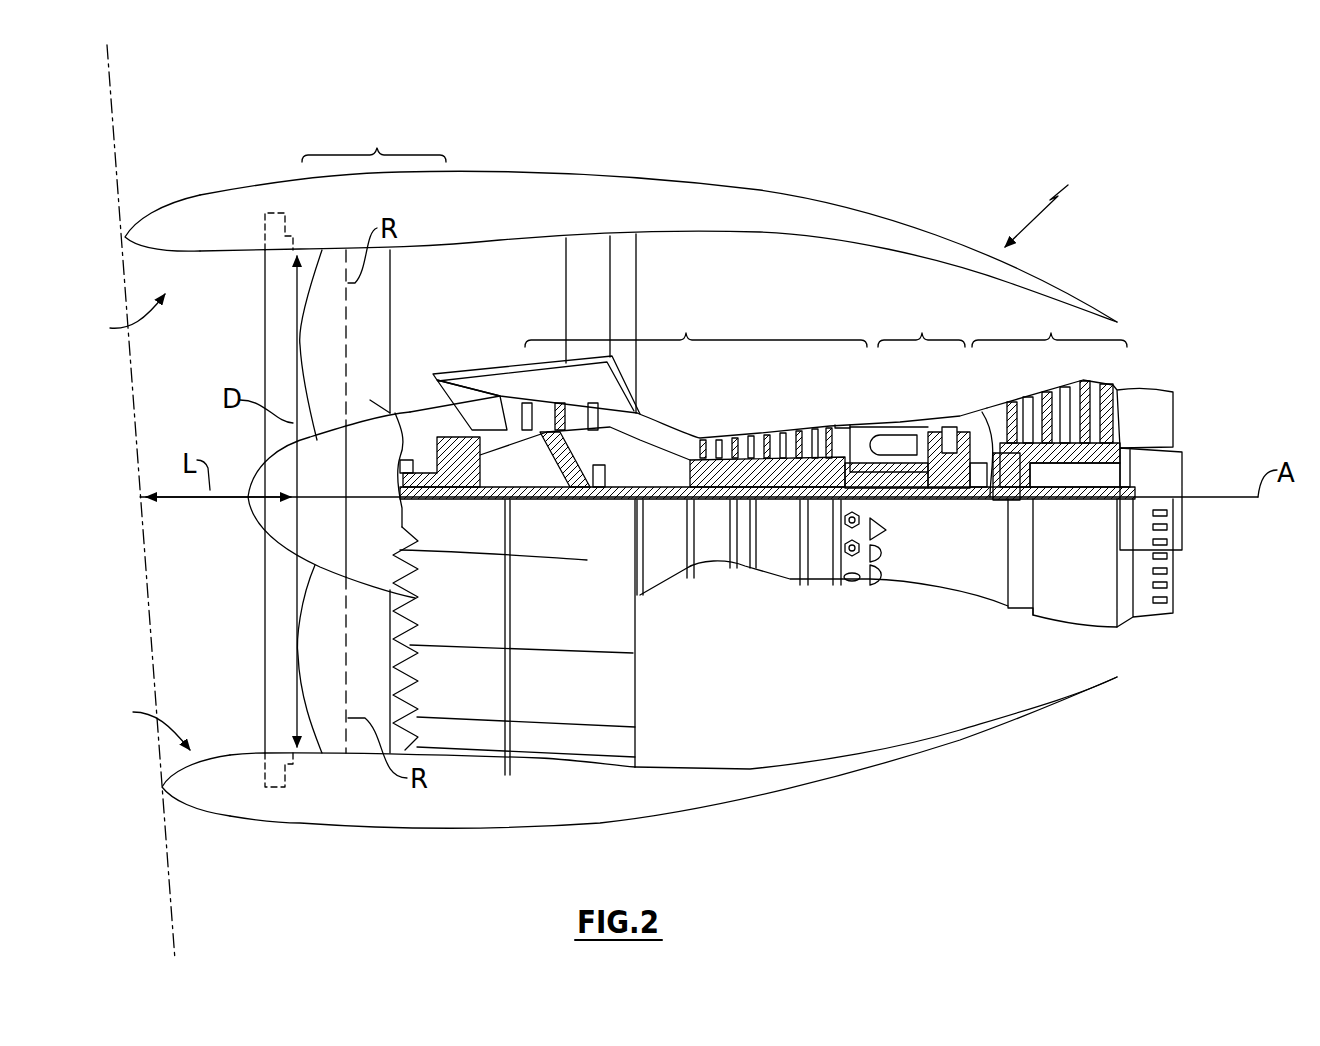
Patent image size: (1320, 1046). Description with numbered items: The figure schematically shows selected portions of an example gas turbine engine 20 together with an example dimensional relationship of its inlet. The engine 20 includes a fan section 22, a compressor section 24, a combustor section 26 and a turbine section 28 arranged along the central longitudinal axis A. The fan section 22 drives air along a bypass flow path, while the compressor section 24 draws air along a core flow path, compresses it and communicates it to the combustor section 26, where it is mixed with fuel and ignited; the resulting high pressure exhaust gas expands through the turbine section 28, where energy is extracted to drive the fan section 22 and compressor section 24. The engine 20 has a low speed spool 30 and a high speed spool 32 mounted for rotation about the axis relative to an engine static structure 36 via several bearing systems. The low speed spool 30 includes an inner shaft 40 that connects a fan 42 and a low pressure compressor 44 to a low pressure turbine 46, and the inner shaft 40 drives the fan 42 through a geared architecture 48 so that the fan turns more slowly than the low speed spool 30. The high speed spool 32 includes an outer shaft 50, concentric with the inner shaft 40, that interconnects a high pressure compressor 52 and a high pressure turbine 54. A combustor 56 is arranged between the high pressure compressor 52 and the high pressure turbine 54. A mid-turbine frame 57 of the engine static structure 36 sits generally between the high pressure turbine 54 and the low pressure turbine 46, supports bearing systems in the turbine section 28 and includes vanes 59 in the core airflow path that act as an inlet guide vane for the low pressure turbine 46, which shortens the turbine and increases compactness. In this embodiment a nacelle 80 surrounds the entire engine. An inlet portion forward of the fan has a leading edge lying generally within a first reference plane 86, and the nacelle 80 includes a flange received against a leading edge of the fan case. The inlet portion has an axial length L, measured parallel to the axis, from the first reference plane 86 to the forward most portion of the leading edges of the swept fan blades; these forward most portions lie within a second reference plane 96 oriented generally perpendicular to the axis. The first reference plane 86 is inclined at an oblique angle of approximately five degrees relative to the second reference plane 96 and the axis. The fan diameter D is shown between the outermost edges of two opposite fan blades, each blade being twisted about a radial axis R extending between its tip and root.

The gas turbine engine 20 is at (1054, 208).
The fan section 22 is at (374, 140).
The compressor section 24 is at (696, 325).
The combustor section 26 is at (921, 325).
The turbine section 28 is at (1049, 325).
The low speed spool 30 is at (782, 506).
The high speed spool 32 is at (822, 435).
The engine static structure 36 is at (820, 585).
The inner shaft 40 is at (652, 499).
The fan 42 is at (397, 308).
The low pressure compressor section 44 is at (585, 400).
The low pressure turbine section 46 is at (1068, 385).
The geared architecture 48 is at (468, 486).
The outer shaft 50 is at (898, 500).
The high pressure compressor section 52 is at (750, 465).
The high pressure turbine section 54 is at (948, 430).
The combustor 56 is at (885, 440).
The mid-turbine frame 57 is at (993, 412).
The vanes 59 is at (1006, 415).
The nacelle 80 is at (297, 805).
The first reference plane 86 is at (122, 140).
The second reference plane 96 is at (296, 578).